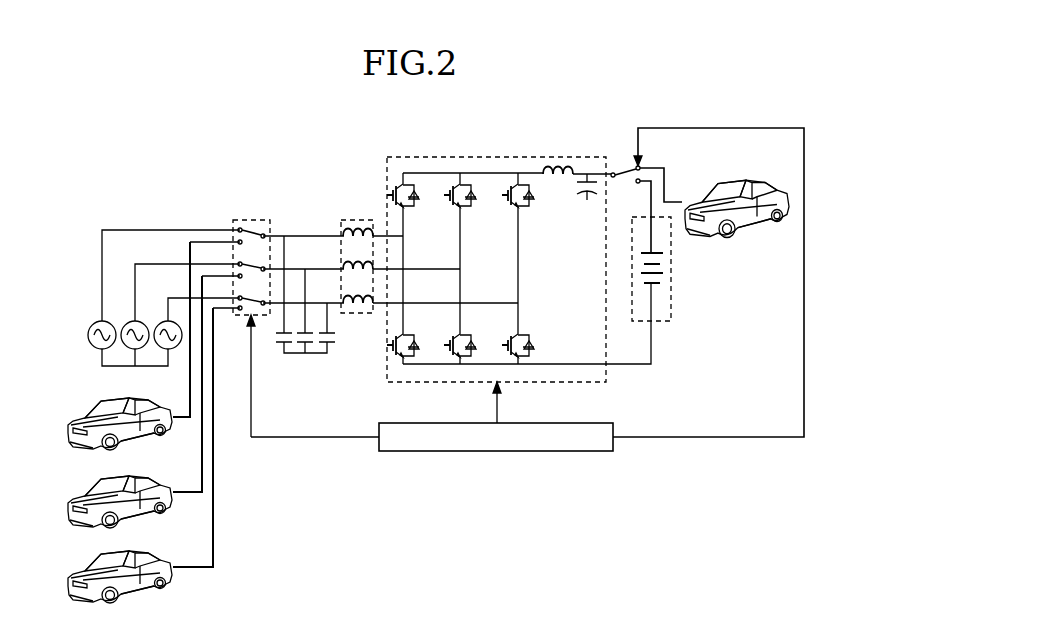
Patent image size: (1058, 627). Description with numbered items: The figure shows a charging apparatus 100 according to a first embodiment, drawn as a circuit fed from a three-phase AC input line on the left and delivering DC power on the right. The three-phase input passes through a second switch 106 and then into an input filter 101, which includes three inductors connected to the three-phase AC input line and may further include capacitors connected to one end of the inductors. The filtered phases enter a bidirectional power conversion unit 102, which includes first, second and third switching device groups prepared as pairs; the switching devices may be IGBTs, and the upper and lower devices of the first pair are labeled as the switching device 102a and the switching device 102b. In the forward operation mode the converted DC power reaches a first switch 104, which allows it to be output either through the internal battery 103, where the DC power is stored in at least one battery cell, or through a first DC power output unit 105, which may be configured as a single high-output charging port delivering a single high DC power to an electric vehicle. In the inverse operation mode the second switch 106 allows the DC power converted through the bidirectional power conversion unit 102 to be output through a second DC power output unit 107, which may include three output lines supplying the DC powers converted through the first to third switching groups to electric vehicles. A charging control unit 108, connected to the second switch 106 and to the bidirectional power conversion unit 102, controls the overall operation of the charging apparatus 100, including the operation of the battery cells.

The charging apparatus 100 is at (140, 122).
The input filter 101 is at (353, 219).
The bidirectional power conversion unit 102 is at (496, 156).
The switching device 102a is at (400, 177).
The switching device 102b is at (400, 357).
The internal battery 103 is at (672, 265).
The first switch 104 is at (628, 164).
The first DC power output unit 105 is at (668, 178).
The second switch 106 is at (250, 219).
The second DC power output unit 107 is at (192, 400).
The charging control unit 108 is at (497, 453).